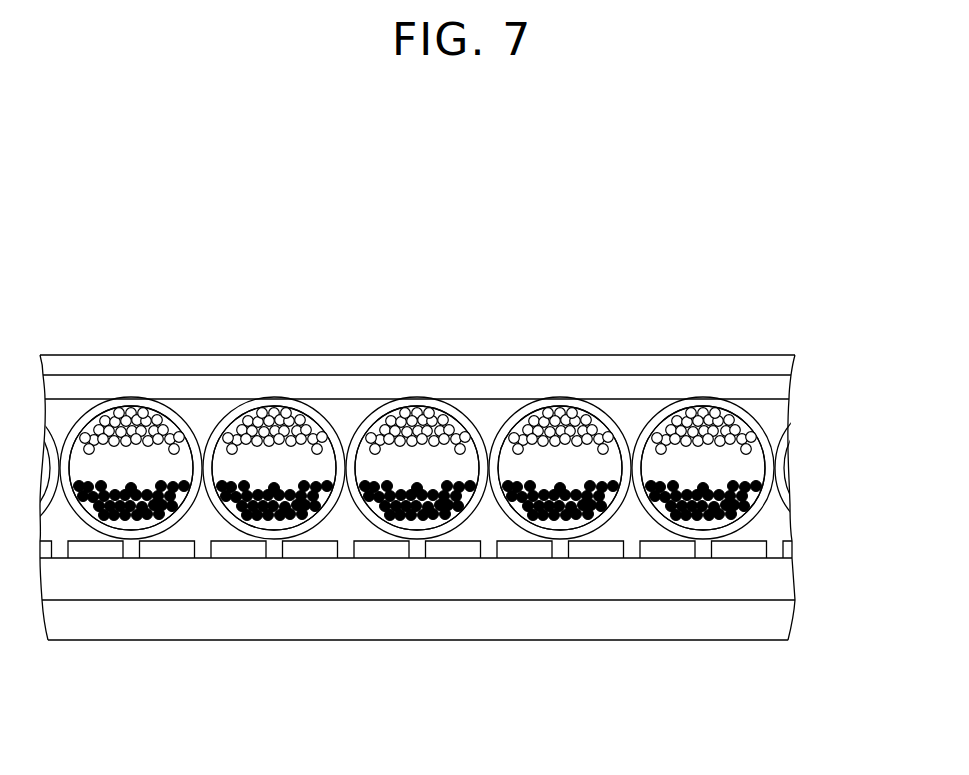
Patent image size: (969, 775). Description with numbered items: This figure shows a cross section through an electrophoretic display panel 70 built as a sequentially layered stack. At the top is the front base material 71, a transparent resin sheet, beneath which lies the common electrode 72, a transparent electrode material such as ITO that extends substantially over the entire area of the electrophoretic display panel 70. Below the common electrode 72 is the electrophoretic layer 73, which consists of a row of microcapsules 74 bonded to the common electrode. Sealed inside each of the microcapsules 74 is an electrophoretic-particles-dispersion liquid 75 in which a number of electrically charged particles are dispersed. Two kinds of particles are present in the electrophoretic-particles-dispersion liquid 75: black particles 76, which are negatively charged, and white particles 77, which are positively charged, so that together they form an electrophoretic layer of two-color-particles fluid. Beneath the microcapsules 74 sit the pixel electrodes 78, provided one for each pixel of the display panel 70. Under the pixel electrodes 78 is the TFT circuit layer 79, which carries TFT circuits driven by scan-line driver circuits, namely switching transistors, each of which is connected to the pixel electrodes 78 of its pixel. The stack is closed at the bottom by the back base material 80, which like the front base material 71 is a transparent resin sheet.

The electrophoretic display panel 70 is at (588, 271).
The front base material 71 is at (783, 366).
The common electrode 72 is at (785, 385).
The electrophoretic layer 73 is at (458, 469).
The microcapsule 74 is at (767, 447).
The electrophoretic-particles-dispersion liquid 75 is at (742, 470).
The black particles 76 is at (464, 510).
The white particles 77 is at (760, 417).
The pixel electrodes 78 is at (758, 550).
The TFT circuit layer 79 is at (783, 580).
The back base material 80 is at (780, 620).